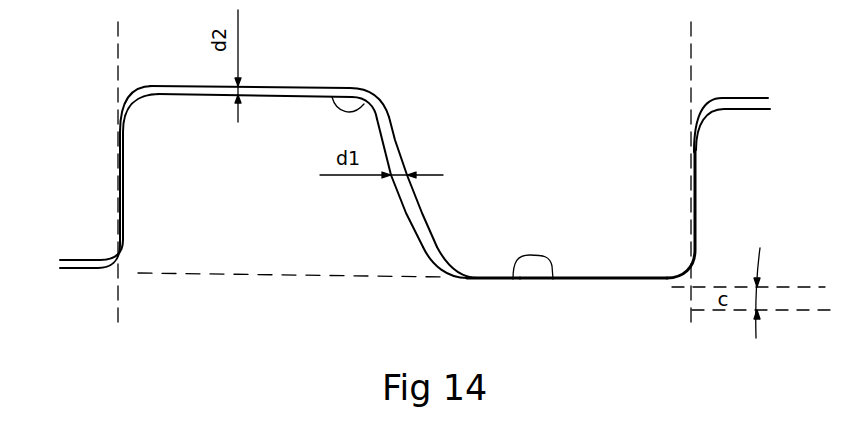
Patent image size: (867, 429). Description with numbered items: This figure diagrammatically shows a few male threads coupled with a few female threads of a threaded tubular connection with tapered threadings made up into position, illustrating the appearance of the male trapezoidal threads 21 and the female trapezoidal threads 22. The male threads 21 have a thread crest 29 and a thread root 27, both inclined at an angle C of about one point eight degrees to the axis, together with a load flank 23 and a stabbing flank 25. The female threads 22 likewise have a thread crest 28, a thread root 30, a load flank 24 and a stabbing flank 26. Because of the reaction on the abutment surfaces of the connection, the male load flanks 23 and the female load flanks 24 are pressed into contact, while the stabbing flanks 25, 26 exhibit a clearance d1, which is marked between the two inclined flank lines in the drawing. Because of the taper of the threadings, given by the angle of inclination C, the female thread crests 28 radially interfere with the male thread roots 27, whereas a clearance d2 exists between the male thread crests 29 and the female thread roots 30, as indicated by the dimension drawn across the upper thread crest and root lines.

The male threads 21 is at (173, 235).
The female threads 22 is at (500, 183).
The load flank 23 is at (695, 243).
The load flank 24 is at (693, 183).
The stabbing flank 25 is at (377, 128).
The stabbing flank 26 is at (421, 193).
The thread root 27 is at (550, 279).
The thread crest 28 is at (481, 280).
The thread crest 29 is at (292, 97).
The thread root 30 is at (364, 107).